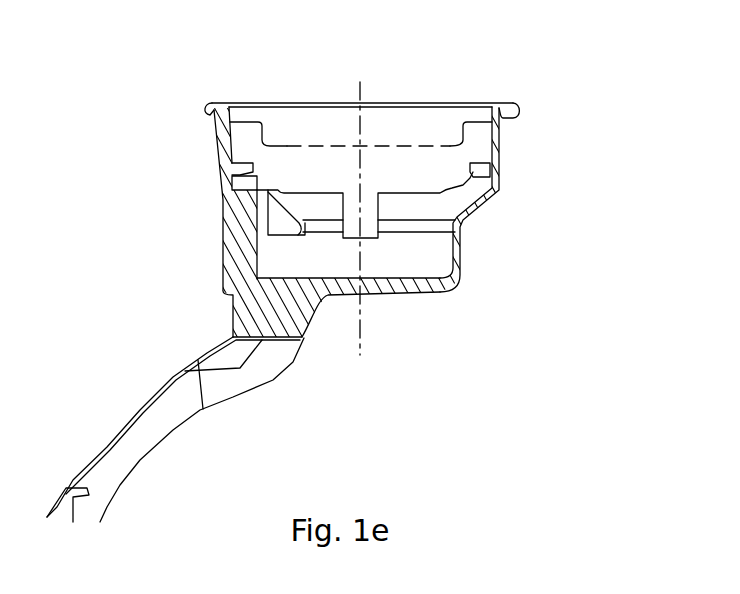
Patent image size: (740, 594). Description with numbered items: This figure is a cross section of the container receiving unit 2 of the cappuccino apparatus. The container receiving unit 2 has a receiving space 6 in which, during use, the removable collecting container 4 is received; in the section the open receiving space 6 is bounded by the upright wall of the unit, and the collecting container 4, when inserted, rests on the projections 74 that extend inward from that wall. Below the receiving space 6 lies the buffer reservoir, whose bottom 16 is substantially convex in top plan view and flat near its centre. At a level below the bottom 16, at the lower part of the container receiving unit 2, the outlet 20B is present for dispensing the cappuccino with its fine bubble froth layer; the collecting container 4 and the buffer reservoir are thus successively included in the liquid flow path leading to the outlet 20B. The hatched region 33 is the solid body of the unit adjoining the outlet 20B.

The container receiving unit 2 is at (505, 211).
The collecting container 4 is at (445, 120).
The receiving space 6 is at (494, 103).
The bottom 16 is at (413, 286).
The outlet 20B is at (275, 350).
The collar 33 is at (256, 308).
The projections 74 is at (480, 170).